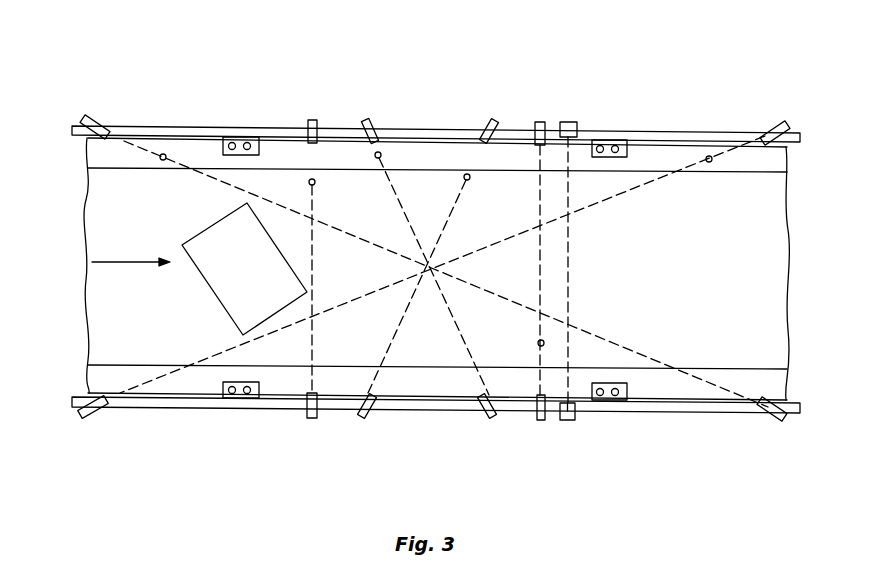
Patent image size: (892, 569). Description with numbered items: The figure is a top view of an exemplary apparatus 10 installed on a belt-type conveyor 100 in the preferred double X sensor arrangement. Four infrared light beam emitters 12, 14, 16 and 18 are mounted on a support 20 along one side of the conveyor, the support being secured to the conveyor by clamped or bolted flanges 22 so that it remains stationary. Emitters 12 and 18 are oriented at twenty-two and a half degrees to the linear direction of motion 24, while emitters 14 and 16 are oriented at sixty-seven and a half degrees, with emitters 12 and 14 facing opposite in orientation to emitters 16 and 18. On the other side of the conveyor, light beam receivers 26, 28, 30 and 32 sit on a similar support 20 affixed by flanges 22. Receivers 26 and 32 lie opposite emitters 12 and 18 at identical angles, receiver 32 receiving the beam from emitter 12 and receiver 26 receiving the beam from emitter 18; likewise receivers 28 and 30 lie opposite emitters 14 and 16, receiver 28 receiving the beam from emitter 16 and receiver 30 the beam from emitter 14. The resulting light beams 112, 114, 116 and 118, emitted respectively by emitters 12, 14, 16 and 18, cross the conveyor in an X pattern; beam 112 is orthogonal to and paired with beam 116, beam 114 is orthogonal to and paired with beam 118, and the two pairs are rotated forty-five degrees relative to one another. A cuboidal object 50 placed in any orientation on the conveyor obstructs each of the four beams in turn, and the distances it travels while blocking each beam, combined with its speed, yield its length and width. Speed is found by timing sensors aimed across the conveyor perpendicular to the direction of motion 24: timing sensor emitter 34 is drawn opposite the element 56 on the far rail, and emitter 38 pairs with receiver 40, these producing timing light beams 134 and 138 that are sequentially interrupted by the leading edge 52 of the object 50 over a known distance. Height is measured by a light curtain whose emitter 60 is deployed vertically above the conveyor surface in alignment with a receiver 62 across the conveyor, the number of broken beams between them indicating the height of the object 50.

The apparatus 10 is at (577, 68).
The light beam emitter 12 is at (86, 122).
The light beam emitter 14 is at (367, 120).
The light beam emitter 16 is at (495, 120).
The light beam emitter 18 is at (771, 126).
The support 20 is at (193, 126).
The flanges 22 is at (235, 137).
The direction of motion 24 is at (127, 262).
The light beam receiver 26 is at (89, 414).
The light beam receiver 28 is at (363, 419).
The light beam receiver 30 is at (489, 419).
The light beam receiver 32 is at (768, 419).
The timing sensor emitter 34 is at (308, 124).
The timing sensor emitter 38 is at (541, 122).
The timing sensor receiver 40 is at (539, 421).
The cuboidal object 50 is at (233, 277).
The leading edge 52 is at (447, 369).
The detector 56 is at (311, 418).
The emitter 60 is at (572, 122).
The receiver 62 is at (568, 421).
The belt-type conveyor 100 is at (433, 157).
The light beam 112 is at (162, 153).
The light beam 114 is at (380, 152).
The light beam 116 is at (467, 174).
The light beam 118 is at (709, 156).
The light beam 134 is at (314, 180).
The light beam 138 is at (539, 341).